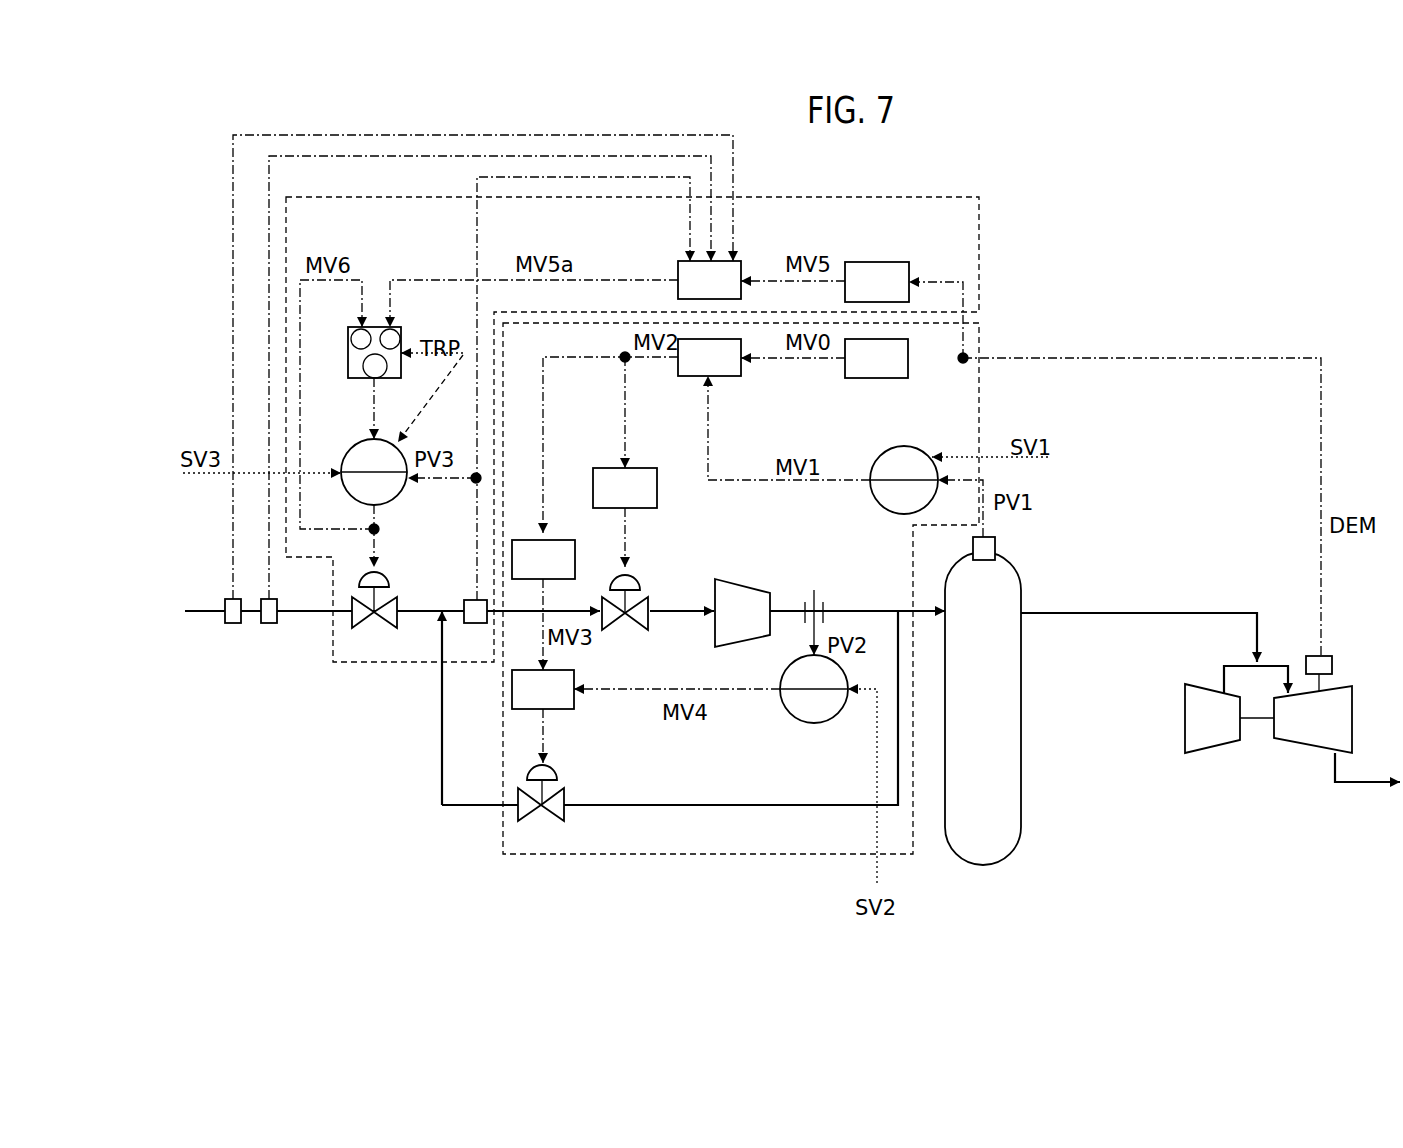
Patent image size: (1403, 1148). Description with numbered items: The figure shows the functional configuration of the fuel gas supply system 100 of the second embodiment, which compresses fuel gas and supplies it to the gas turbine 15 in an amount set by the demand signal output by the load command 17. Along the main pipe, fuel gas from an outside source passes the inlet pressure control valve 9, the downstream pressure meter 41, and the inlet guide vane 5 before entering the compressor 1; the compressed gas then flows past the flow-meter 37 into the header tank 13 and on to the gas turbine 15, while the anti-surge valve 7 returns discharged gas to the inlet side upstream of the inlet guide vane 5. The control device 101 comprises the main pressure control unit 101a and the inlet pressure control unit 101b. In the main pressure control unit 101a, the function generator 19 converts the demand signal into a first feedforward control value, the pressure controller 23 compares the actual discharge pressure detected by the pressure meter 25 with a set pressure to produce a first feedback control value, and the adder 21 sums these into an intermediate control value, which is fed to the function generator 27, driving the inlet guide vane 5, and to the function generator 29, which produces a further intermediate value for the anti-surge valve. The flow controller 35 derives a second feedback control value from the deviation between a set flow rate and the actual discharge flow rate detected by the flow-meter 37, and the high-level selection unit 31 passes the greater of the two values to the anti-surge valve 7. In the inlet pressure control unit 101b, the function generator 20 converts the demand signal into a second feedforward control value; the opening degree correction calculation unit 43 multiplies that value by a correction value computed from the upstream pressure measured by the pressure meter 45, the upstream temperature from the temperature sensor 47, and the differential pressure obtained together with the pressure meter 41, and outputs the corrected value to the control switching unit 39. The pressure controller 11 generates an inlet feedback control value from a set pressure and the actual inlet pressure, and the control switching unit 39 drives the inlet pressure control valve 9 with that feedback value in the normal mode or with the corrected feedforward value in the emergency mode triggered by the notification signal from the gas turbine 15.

The compressor 1 is at (742, 585).
The inlet guide vane (IGV) 5 is at (642, 584).
The anti-surge valve (ASV) 7 is at (565, 795).
The inlet pressure control valve (PCV) 9 is at (389, 579).
The pressure controller 11 is at (405, 495).
The header tank 13 is at (1021, 805).
The gas turbine 15 is at (1297, 742).
The load command 17 is at (1332, 665).
The function generator 19 is at (878, 380).
The function generator 20 is at (877, 262).
The adder 21 is at (741, 370).
The pressure controller 23 is at (906, 446).
The pressure meter 25 is at (995, 543).
The function generator 27 is at (657, 490).
The function generator 29 is at (562, 540).
The high-level selection unit 31 is at (574, 700).
The flow controller 35 is at (817, 723).
The flow-meter 37 is at (820, 595).
The control switching unit 39 is at (348, 354).
The pressure meter 41 is at (476, 623).
The opening degree correction calculation unit 43 is at (678, 275).
The pressure meter 45 is at (269, 623).
The temperature sensor 47 is at (233, 623).
The fuel gas supply system 100 is at (1170, 226).
The control device 101 is at (723, 525).
The main pressure control unit 101a is at (979, 341).
The inlet pressure control unit 101b is at (979, 277).